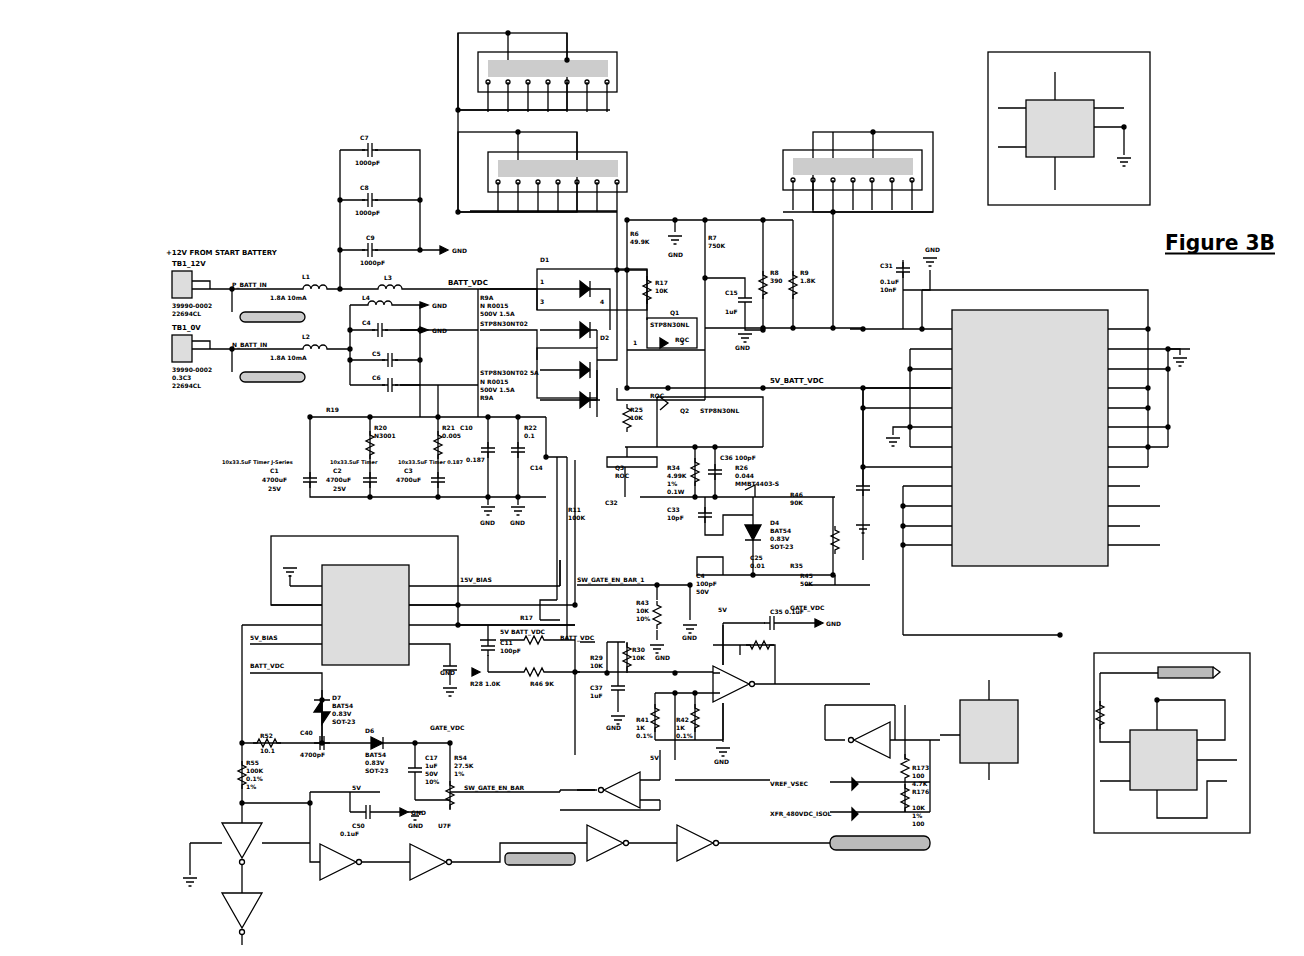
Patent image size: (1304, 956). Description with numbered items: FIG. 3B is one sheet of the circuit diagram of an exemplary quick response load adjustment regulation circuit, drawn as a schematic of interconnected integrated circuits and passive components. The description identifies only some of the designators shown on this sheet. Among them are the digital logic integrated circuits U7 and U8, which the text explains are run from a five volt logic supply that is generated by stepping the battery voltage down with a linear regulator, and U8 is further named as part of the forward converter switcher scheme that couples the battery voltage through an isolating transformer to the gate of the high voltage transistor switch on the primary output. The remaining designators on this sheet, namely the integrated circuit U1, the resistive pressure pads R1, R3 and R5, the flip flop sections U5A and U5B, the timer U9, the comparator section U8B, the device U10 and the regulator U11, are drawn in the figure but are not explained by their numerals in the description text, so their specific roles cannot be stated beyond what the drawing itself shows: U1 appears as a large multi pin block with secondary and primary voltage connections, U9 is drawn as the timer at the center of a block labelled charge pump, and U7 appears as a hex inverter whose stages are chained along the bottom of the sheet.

The BCM master transformer/controller U1 is at (1020, 462).
The pressure pad sensor R1 is at (537, 71).
The pressure pad sensor R3 is at (542, 171).
The pressure pad sensor R5 is at (858, 171).
The 74HC74 flip-flop U5B is at (1069, 128).
The 74HC74 flip-flop U5A is at (1172, 743).
The NE555 charge pump timer U9 is at (408, 580).
The digital logic IC U8 is at (800, 682).
The TLV3501 comparator U8B is at (657, 777).
The comparator U10 is at (850, 727).
The digital logic IC U7 is at (556, 878).
The voltage regulator U11 is at (989, 732).